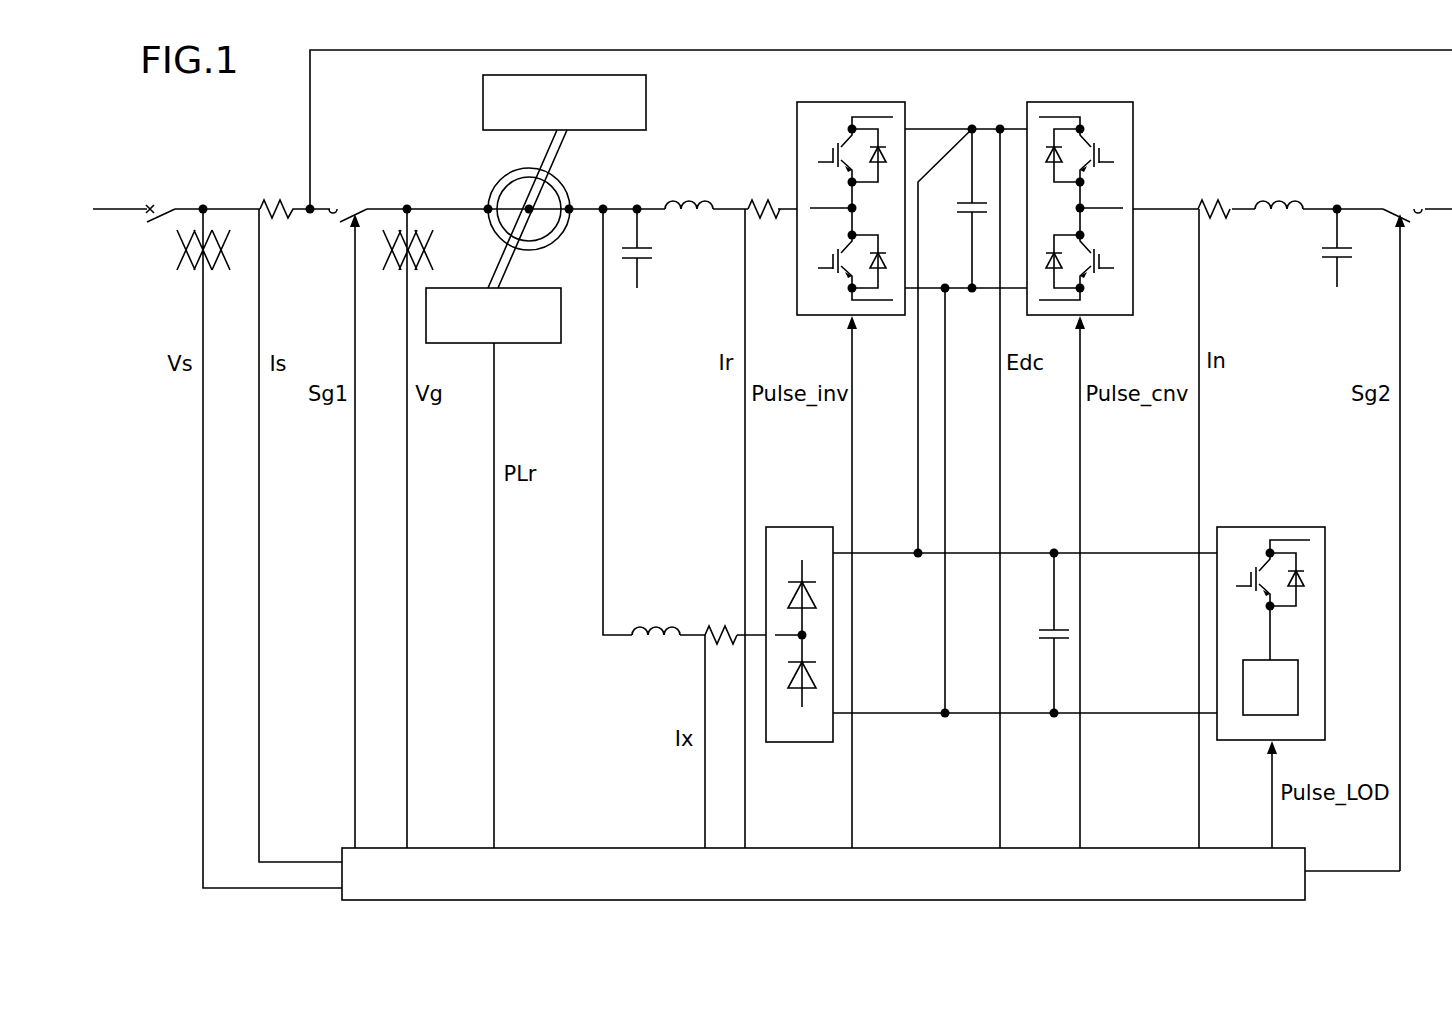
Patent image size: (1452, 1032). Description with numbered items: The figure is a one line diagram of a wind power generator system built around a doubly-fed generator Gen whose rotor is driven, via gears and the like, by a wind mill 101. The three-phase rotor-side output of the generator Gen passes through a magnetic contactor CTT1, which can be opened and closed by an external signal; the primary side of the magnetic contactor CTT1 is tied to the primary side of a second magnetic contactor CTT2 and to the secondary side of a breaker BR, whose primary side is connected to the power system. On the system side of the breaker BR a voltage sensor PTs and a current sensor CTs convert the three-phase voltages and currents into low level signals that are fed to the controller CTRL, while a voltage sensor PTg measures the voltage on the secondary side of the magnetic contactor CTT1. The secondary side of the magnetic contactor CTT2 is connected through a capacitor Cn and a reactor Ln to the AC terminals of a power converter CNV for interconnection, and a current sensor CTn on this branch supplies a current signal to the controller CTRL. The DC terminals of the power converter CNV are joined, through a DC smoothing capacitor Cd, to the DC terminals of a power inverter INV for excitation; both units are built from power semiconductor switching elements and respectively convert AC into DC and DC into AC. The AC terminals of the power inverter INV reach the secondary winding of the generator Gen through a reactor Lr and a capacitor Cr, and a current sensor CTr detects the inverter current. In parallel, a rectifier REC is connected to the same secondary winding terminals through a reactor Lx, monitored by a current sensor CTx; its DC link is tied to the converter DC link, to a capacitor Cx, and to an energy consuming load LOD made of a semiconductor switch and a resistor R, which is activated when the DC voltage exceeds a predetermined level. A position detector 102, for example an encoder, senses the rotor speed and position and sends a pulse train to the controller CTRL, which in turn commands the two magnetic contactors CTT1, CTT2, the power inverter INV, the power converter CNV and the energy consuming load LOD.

The wind mill 101 is at (483, 100).
The position detector 102 is at (548, 343).
The breaker BR is at (161, 198).
The voltage sensor PTs is at (238, 548).
The current sensor CTs is at (300, 518).
The magnetic contactor CTT1 is at (354, 511).
The voltage sensor PTg is at (432, 528).
The generator Gen is at (529, 209).
The capacitor Cr is at (637, 264).
The reactor Lr is at (689, 190).
The current sensor CTr is at (760, 510).
The power inverter INV is at (851, 196).
The DC smoothing capacitor Cd is at (956, 208).
The power converter CNV is at (1080, 196).
The current sensor CTn is at (1213, 510).
The reactor Ln is at (1279, 190).
The magnetic contactor CTT2 is at (1365, 521).
The capacitor Cn is at (1337, 264).
The reactor Lx is at (656, 615).
The current sensor CTx is at (719, 722).
The rectifier REC is at (799, 621).
The capacitor Cx is at (1040, 633).
The energy consuming load LOD is at (1271, 620).
The resistor R is at (1270, 687).
The controller CTRL is at (823, 874).